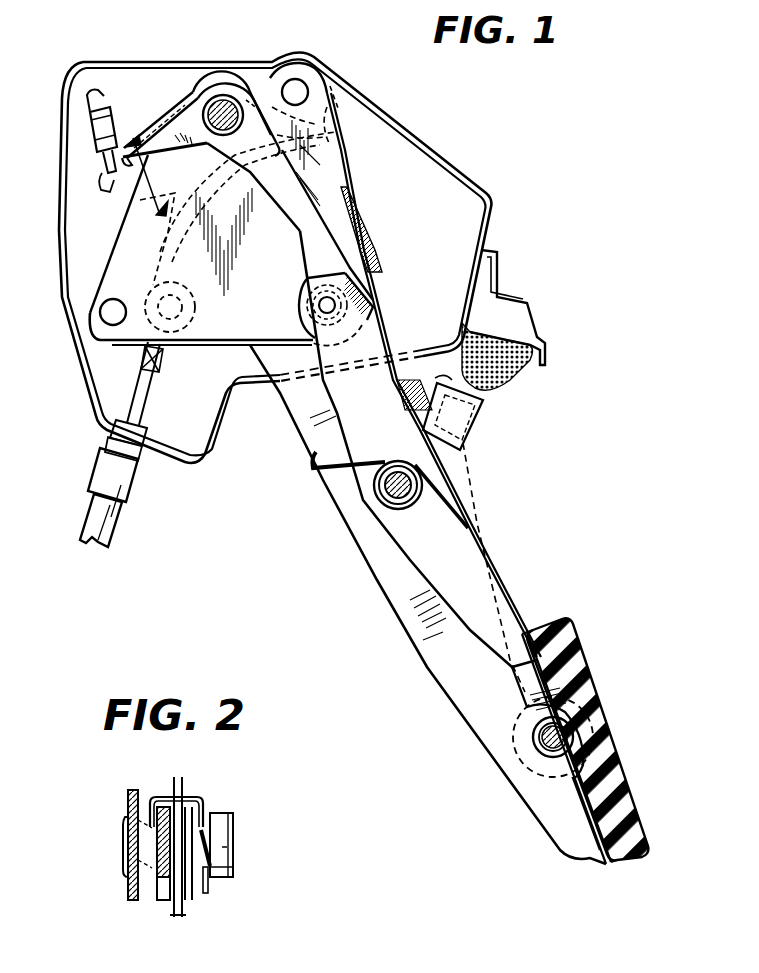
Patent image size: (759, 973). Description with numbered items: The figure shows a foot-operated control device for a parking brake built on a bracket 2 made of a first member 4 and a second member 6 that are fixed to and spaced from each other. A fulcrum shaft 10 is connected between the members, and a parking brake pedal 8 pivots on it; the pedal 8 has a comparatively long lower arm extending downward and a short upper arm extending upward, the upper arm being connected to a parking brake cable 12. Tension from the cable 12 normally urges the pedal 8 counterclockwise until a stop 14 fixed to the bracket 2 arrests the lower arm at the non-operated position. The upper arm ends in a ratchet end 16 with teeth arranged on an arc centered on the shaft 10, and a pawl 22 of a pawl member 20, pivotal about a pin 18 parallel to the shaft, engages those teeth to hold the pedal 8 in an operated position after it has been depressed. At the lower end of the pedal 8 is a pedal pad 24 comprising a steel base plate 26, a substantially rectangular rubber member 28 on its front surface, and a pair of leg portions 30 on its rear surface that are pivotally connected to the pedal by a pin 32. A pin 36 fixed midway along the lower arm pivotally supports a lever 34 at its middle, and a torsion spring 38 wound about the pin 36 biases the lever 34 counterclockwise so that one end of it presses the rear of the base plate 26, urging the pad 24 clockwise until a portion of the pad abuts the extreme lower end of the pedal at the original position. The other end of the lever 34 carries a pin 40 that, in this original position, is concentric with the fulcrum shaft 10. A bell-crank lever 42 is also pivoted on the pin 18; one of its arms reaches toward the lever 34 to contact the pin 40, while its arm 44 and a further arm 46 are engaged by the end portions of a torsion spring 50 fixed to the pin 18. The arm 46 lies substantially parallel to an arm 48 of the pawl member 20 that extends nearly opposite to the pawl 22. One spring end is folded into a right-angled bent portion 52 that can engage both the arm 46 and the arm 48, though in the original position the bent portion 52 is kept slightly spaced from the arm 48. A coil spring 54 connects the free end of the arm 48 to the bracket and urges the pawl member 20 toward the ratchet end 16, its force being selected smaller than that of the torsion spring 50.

In FIG. 1, the bracket 2 is at (423, 113).
In FIG. 1, the first member 4 is at (422, 152).
In FIG. 2, the first member 4 is at (127, 888).
In FIG. 1, the second member 6 is at (322, 120).
In FIG. 2, the second member 6 is at (180, 915).
In FIG. 1, the parking brake pedal 8 is at (443, 652).
In FIG. 1, the fulcrum shaft 10 is at (317, 290).
In FIG. 1, the parking brake cable 12 is at (143, 408).
In FIG. 1, the stop 14 is at (513, 370).
In FIG. 1, the ratchet end 16 is at (140, 200).
In FIG. 1, the pin 18 is at (222, 110).
In FIG. 2, the pin 18 is at (230, 837).
In FIG. 1, the pawl member 20 is at (254, 105).
In FIG. 2, the pawl member 20 is at (158, 900).
In FIG. 1, the pawl 22 is at (327, 107).
In FIG. 1, the pedal pad 24 is at (617, 733).
In FIG. 1, the base plate 26 is at (563, 668).
In FIG. 1, the rubber member 28 is at (617, 793).
In FIG. 1, the leg portions 30 is at (560, 781).
In FIG. 1, the pin 32 is at (547, 747).
In FIG. 1, the lever 34 is at (460, 556).
In FIG. 1, the pin 36 is at (387, 497).
In FIG. 1, the torsion spring 38 is at (343, 473).
In FIG. 1, the pin 40 is at (340, 303).
In FIG. 1, the bell-crank lever 42 is at (318, 189).
In FIG. 2, the bell-crank lever 42 is at (193, 898).
In FIG. 1, the arm 44 is at (325, 235).
In FIG. 1, the arm 46 is at (158, 148).
In FIG. 1, the arm 48 is at (100, 177).
In FIG. 1, the torsion spring 50 is at (268, 84).
In FIG. 2, the torsion spring 50 is at (200, 827).
In FIG. 2, the right-angled bent portion 52 is at (167, 803).
In FIG. 1, the coil spring 54 is at (87, 121).